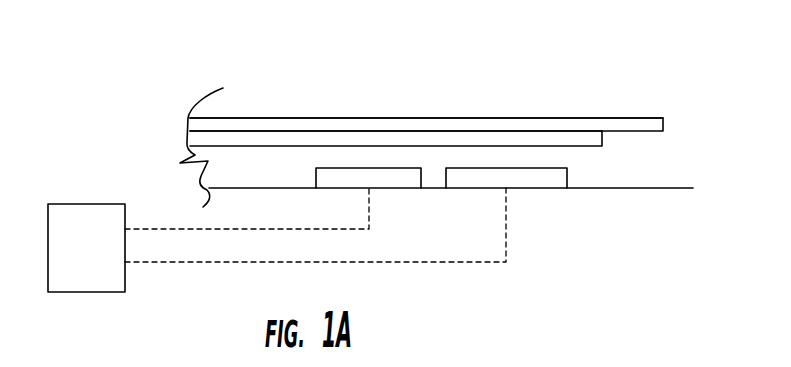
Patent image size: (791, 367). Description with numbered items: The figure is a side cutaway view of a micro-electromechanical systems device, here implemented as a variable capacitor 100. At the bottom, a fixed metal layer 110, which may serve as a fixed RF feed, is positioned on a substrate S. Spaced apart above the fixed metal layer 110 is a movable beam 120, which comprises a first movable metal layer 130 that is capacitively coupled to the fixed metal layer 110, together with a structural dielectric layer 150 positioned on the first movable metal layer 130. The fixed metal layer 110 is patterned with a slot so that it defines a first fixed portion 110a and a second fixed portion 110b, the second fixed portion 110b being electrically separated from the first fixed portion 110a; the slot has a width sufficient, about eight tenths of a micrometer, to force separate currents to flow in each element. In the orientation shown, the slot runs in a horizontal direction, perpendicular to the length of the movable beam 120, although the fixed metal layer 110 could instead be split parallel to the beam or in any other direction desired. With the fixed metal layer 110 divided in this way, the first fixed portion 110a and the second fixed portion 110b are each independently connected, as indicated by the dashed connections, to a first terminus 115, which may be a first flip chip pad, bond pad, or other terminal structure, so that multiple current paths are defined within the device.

The variable capacitor 100 is at (596, 52).
The fixed metal layer 110 is at (464, 250).
The first fixed portion 110a is at (535, 188).
The second fixed portion 110b is at (380, 188).
The first terminus 115 is at (93, 293).
The movable beam 120 is at (613, 109).
The first movable metal layer 130 is at (602, 136).
The structural dielectric layer 150 is at (418, 117).
The substrate S is at (653, 195).